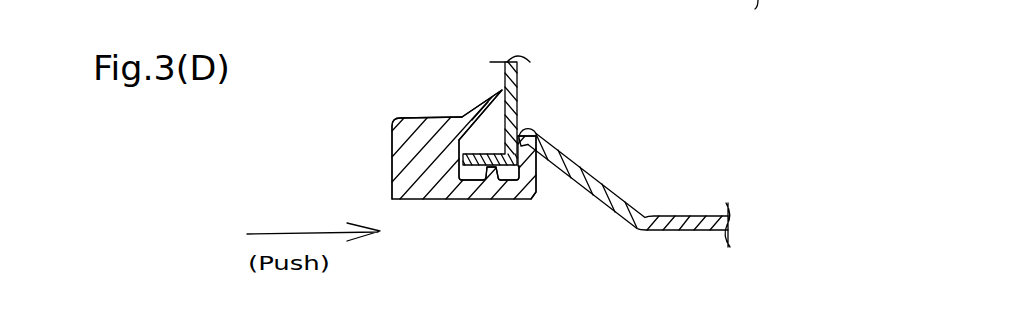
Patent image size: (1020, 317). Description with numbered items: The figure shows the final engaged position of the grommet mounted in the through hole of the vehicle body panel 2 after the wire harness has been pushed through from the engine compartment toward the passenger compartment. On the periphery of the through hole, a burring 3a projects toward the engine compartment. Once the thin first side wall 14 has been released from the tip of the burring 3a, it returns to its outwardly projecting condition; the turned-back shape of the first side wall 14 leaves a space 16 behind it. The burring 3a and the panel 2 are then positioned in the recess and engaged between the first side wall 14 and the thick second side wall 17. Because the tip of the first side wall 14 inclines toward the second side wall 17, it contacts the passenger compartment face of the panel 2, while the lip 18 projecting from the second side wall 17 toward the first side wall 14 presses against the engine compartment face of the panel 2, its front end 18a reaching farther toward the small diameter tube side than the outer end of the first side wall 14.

The vehicle body panel 2 is at (518, 90).
The burring 3a is at (455, 146).
The first side wall 14 is at (543, 134).
The space 16 is at (541, 160).
The second side wall 17 is at (458, 141).
The lip 18 is at (462, 116).
The front end of lip 18a is at (504, 90).